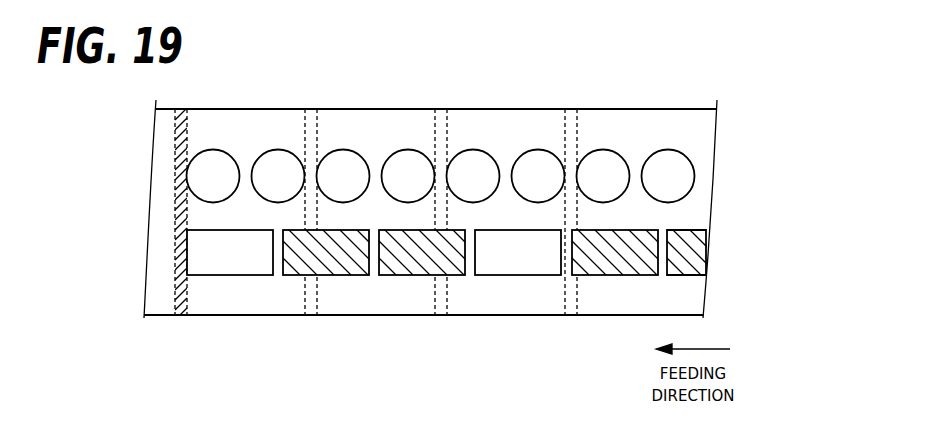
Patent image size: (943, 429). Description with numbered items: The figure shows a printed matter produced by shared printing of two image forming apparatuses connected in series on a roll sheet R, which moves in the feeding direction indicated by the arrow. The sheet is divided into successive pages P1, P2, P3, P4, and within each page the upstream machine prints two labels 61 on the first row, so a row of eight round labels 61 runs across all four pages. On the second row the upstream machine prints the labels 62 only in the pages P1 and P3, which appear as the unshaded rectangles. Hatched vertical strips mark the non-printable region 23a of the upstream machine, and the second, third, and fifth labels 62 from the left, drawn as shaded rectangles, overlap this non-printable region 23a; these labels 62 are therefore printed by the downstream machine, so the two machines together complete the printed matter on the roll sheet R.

The label 61 is at (213, 149).
The label 62 is at (231, 276).
The non-printable region 23a is at (182, 316).
The roll sheet R is at (692, 109).
The page P1 is at (240, 109).
The page P2 is at (373, 109).
The page P3 is at (502, 109).
The page P4 is at (632, 109).